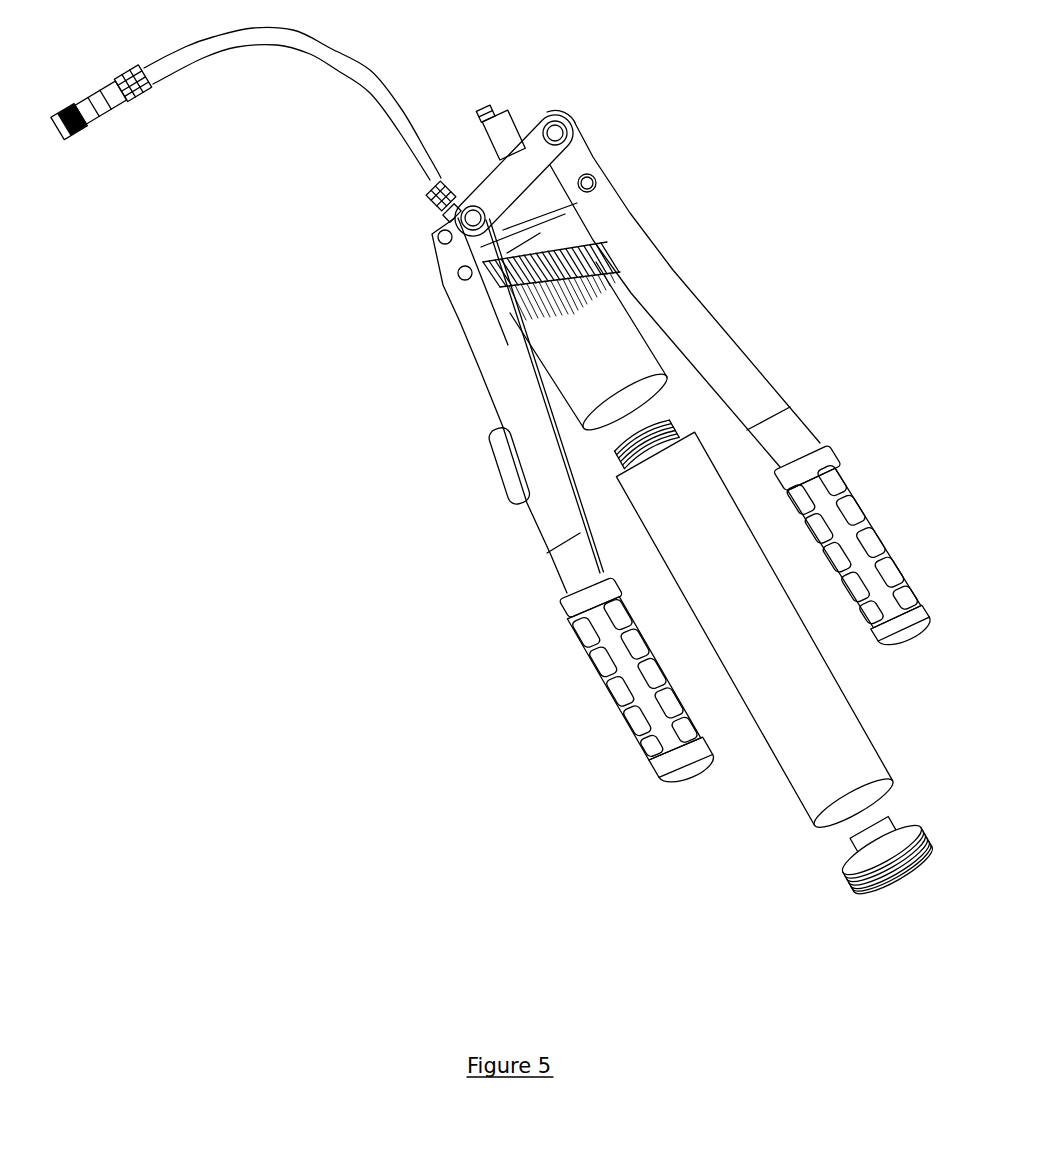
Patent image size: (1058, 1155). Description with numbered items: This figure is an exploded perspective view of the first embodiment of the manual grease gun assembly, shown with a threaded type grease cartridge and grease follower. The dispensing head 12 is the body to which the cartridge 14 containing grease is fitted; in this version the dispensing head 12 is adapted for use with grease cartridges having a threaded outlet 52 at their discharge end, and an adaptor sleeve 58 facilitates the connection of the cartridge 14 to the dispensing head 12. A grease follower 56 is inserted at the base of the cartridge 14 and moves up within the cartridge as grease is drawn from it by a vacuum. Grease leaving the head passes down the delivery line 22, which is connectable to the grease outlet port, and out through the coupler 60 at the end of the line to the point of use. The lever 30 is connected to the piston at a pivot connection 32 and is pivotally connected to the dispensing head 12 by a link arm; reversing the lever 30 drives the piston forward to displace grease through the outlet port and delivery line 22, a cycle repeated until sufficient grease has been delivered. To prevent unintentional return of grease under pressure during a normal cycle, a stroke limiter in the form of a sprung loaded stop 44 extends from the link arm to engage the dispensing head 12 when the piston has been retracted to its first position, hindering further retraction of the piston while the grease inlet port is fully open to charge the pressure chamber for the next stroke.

The dispensing head 12 is at (488, 244).
The cartridge 14 is at (783, 773).
The delivery line 22 is at (237, 45).
The lever 30 is at (620, 223).
The pivot connection 32 is at (591, 176).
The sprung loaded stop 44 is at (493, 123).
The threaded outlet 52 is at (672, 430).
The grease follower 56 is at (920, 832).
The adaptor sleeve 58 is at (605, 340).
The coupler 60 is at (90, 127).